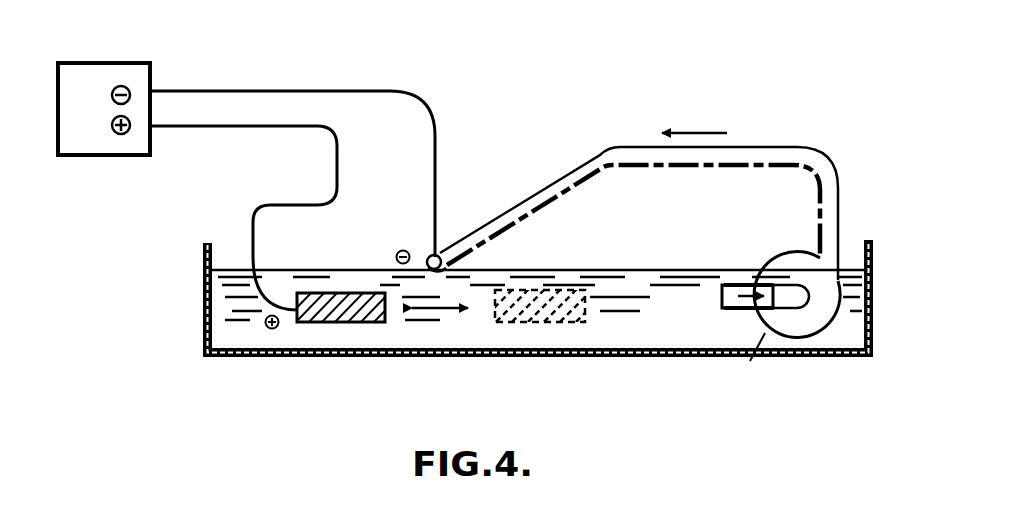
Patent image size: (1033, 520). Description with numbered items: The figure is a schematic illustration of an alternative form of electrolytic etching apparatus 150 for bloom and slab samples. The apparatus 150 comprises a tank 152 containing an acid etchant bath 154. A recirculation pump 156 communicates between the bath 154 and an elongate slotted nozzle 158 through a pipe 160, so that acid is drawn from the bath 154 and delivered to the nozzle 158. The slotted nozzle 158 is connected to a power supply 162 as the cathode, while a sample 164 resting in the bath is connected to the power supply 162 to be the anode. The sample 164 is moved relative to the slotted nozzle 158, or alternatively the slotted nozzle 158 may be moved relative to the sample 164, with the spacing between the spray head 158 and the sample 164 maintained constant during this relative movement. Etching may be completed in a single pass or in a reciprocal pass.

The apparatus 150 is at (586, 90).
The tank 152 is at (203, 318).
The acid etchant bath 154 is at (620, 323).
The recirculation pump 156 is at (815, 273).
The elongate slotted nozzle 158 is at (438, 255).
The pipe 160 is at (673, 167).
The power supply 162 is at (90, 140).
The sample 164 is at (342, 308).